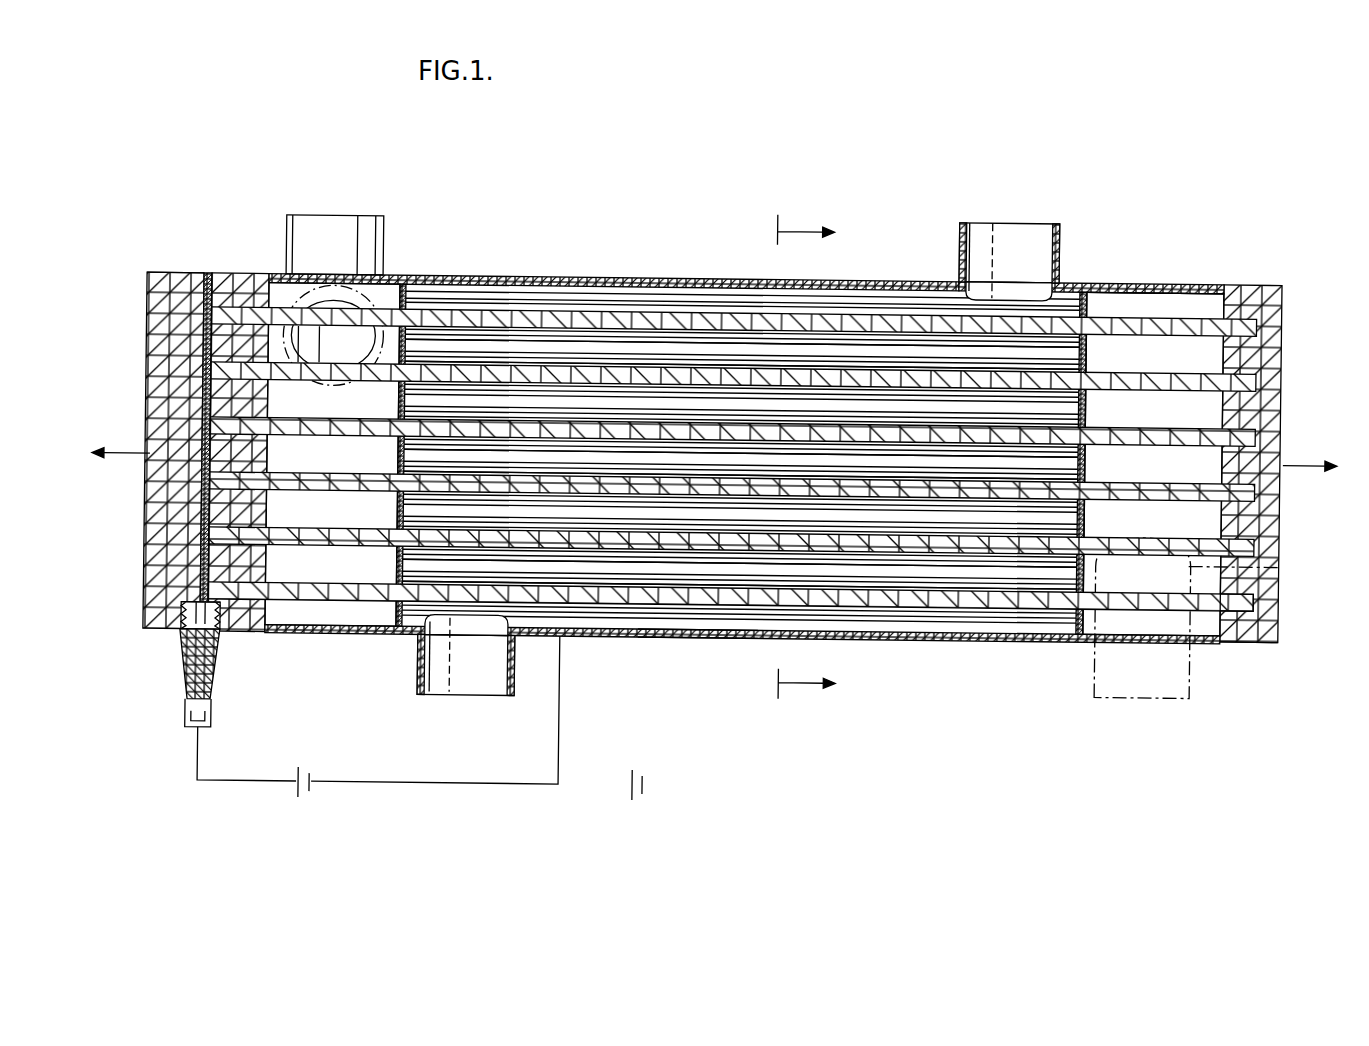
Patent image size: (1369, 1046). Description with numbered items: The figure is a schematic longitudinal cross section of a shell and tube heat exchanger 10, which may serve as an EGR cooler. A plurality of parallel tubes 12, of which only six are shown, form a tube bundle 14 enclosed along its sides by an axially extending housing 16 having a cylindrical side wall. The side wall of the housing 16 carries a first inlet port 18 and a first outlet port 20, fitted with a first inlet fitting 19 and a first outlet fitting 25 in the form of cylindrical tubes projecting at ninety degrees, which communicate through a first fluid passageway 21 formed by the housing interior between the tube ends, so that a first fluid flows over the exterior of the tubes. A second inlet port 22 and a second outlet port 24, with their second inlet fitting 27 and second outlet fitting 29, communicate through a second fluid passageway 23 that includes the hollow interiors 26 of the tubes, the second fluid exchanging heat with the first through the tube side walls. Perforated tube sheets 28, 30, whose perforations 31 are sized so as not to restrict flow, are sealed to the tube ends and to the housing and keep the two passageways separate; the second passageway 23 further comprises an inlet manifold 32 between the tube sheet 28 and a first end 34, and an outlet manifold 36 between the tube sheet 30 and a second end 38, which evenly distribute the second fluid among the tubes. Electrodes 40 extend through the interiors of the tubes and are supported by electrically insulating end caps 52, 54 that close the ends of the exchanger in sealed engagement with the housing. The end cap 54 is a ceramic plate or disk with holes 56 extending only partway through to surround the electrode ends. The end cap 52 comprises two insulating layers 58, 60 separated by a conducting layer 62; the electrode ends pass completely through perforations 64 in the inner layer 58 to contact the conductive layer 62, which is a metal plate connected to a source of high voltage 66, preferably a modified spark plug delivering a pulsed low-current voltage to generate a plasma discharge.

The heat exchanger 10 is at (1117, 222).
The tubes 12 is at (529, 410).
The tube bundle 14 is at (602, 275).
The housing 16 is at (627, 640).
The first inlet port 18 is at (999, 230).
The first inlet fitting 19 is at (1057, 243).
The first outlet port 20 is at (468, 672).
The first fluid passageway 21 is at (883, 276).
The second inlet port 22 is at (310, 330).
The second fluid passageway 23 is at (698, 634).
The second outlet port 24 is at (1272, 560).
The first outlet fitting 25 is at (421, 672).
The hollow interiors of tubes 26 is at (726, 420).
The second inlet fitting 27 is at (381, 224).
The tube sheet 28 is at (397, 625).
The second outlet fitting 29 is at (386, 286).
The tube sheet 30 is at (1068, 636).
The perforations 31 is at (1088, 300).
The inlet manifold 32 is at (333, 575).
The first end 34 is at (147, 292).
The outlet manifold 36 is at (1160, 398).
The second end 38 is at (1281, 296).
The electrodes 40 is at (1257, 372).
The end cap 52 is at (166, 273).
The end cap 54 is at (1282, 632).
The holes 56 is at (1256, 582).
The insulating layer 58 is at (236, 284).
The insulating layer 60 is at (163, 634).
The conducting layer 62 is at (204, 284).
The perforations 64 is at (243, 610).
The source of high voltage 66 is at (183, 700).